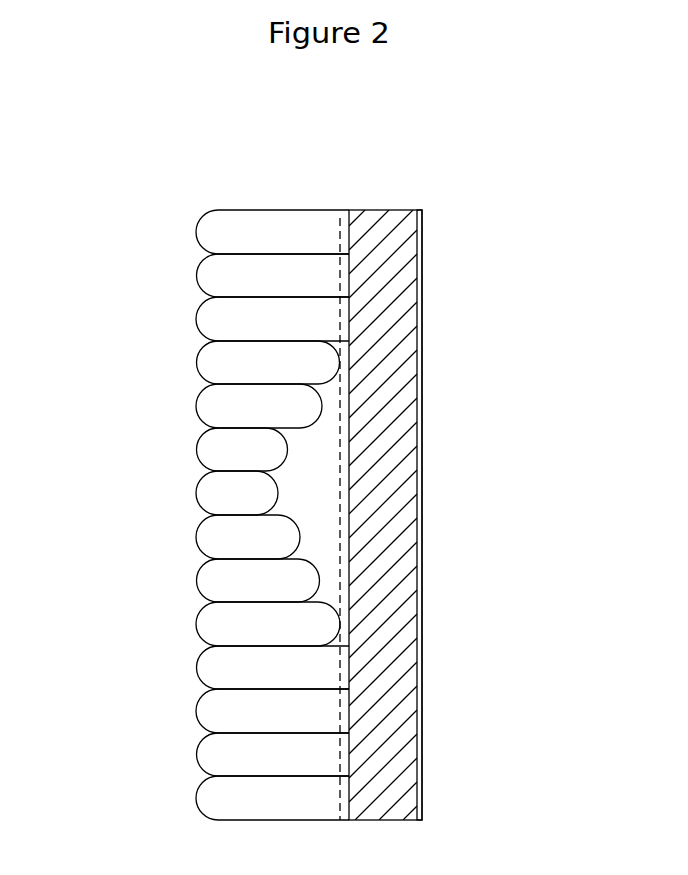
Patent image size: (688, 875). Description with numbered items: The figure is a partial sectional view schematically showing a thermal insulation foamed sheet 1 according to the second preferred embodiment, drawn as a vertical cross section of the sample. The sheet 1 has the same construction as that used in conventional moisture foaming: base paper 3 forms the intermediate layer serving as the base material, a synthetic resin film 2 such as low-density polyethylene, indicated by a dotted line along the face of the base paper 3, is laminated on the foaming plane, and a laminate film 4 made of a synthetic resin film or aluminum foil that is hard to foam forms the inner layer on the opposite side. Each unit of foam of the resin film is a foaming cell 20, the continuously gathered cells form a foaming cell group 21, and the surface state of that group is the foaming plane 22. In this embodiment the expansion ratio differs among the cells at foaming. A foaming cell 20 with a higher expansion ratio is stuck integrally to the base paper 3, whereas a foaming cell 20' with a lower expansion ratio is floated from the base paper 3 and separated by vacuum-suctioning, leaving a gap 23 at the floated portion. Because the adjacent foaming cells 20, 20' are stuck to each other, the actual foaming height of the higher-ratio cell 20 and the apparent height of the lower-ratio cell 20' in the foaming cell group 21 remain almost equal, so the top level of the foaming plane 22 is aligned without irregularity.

The thermal insulation foamed sheet 1 is at (441, 214).
The synthetic resin film 2 is at (343, 221).
The base paper 3 is at (375, 250).
The laminate film 4 is at (422, 263).
The foaming cell 20 is at (272, 486).
The foaming cell with lower expansion ratio 20' is at (235, 493).
The foaming cell group 21 is at (203, 486).
The foaming plane 22 is at (203, 486).
The gap 23 is at (310, 492).